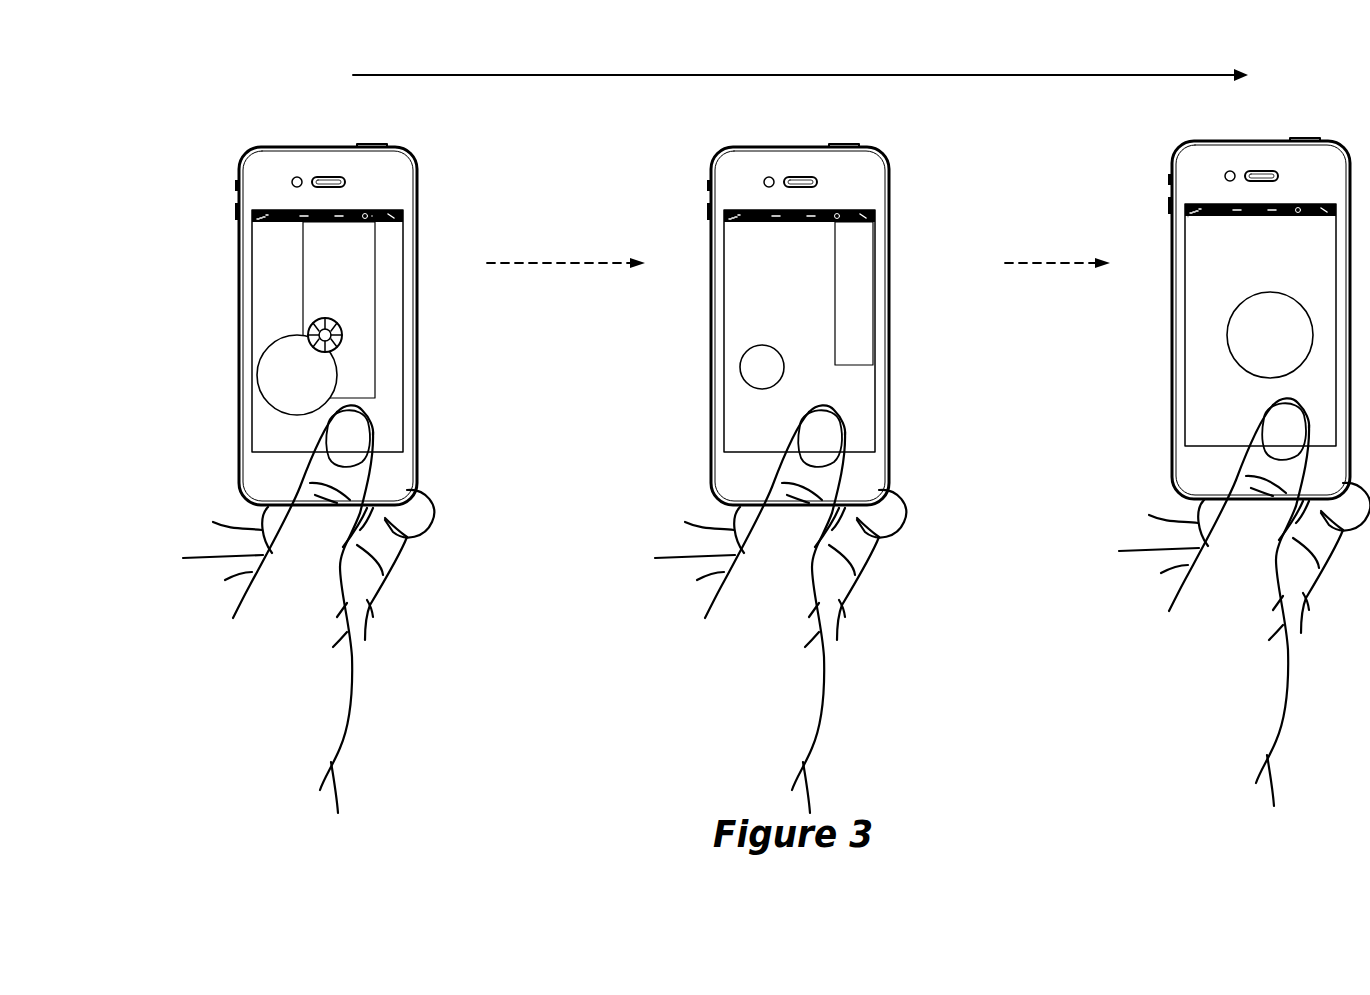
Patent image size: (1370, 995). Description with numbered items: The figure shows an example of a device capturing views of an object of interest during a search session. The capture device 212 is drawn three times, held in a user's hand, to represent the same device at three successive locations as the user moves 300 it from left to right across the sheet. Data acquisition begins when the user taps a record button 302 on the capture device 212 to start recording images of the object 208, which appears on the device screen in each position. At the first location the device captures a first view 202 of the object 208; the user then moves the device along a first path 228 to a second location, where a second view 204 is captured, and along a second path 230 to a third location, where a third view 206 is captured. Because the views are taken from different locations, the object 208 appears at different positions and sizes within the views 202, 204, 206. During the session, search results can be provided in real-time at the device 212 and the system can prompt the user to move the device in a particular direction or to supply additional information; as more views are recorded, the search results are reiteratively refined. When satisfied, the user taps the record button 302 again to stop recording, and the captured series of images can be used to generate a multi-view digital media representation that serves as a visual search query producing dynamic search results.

The movement of capture device 300 is at (800, 62).
The record button 302 is at (313, 322).
The capture device 212 is at (1173, 367).
The object 208 is at (337, 377).
The view 202 is at (270, 438).
The view 204 is at (752, 437).
The view 206 is at (1215, 432).
The path 228 is at (566, 252).
The path 230 is at (1057, 251).